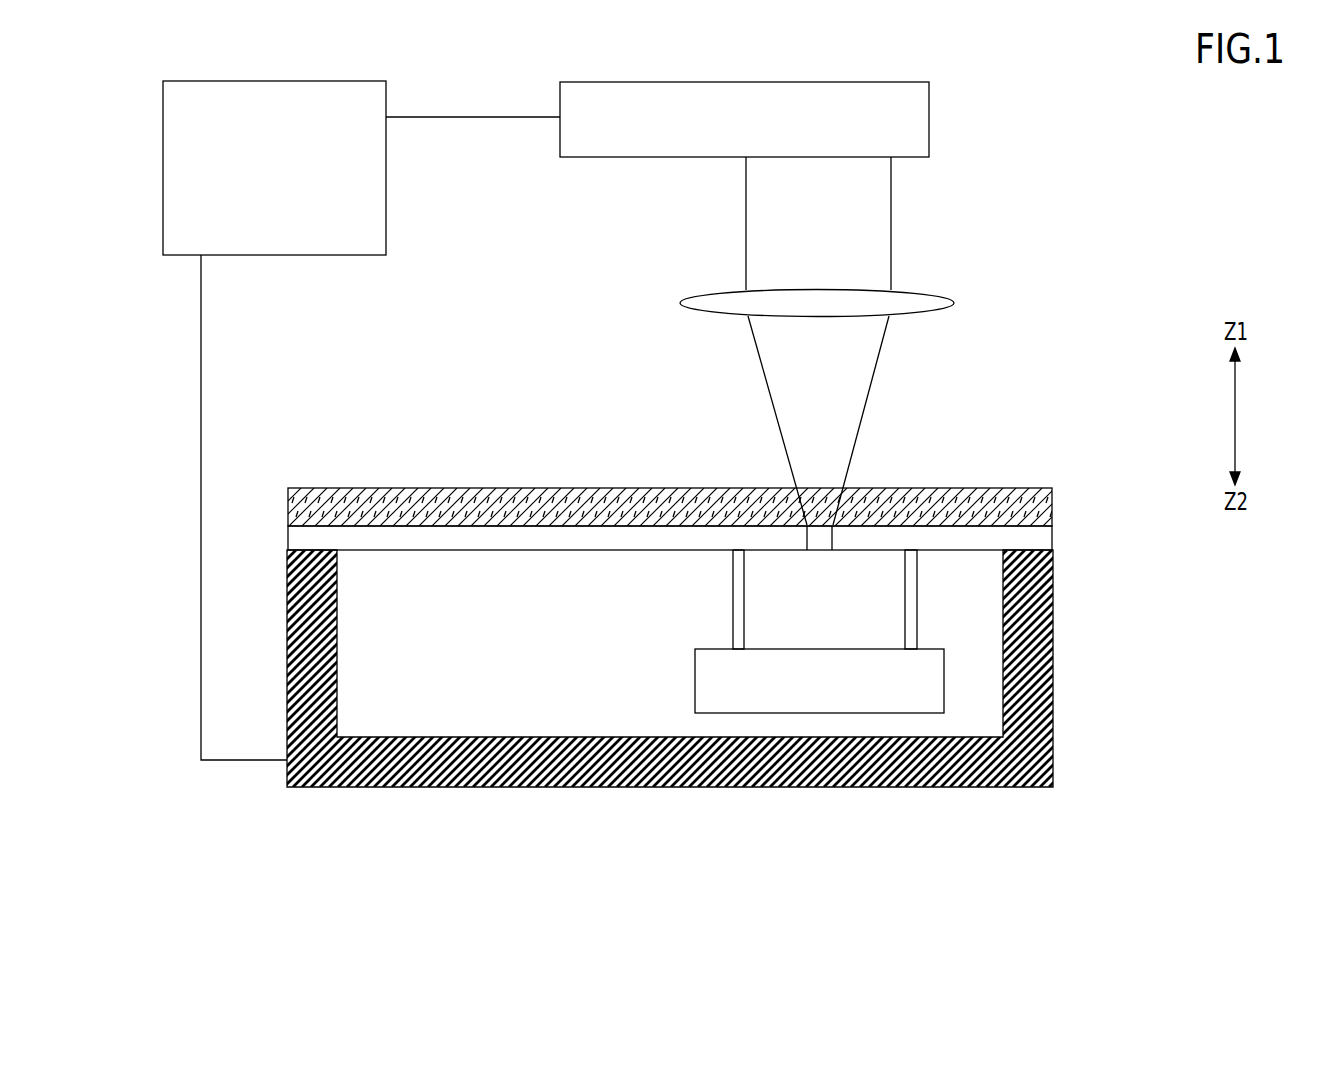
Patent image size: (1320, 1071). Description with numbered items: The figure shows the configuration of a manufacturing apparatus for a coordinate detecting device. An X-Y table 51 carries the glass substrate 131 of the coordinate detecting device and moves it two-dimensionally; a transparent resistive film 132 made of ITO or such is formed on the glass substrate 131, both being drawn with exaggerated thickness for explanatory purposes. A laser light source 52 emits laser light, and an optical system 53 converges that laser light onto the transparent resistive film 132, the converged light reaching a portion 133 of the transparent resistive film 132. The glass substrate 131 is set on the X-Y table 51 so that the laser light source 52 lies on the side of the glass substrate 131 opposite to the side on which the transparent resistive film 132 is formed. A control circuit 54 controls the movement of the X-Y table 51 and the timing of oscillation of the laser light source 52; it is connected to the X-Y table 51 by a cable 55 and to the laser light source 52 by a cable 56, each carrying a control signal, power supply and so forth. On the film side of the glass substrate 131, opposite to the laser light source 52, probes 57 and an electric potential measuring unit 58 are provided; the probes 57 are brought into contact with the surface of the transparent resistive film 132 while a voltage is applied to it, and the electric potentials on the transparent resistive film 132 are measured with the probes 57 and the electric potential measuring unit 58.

The X-Y table 51 is at (448, 787).
The laser light source 52 is at (929, 119).
The condensing lens 53 is at (955, 303).
The control circuit 54 is at (243, 81).
The cable 55 is at (201, 426).
The cable 56 is at (473, 118).
The probes 57 is at (732, 583).
The electric potential measuring unit 58 is at (693, 677).
The glass substrate 131 is at (1013, 488).
The transparent resistive film 132 is at (1053, 546).
The irradiated portion 133 is at (818, 542).